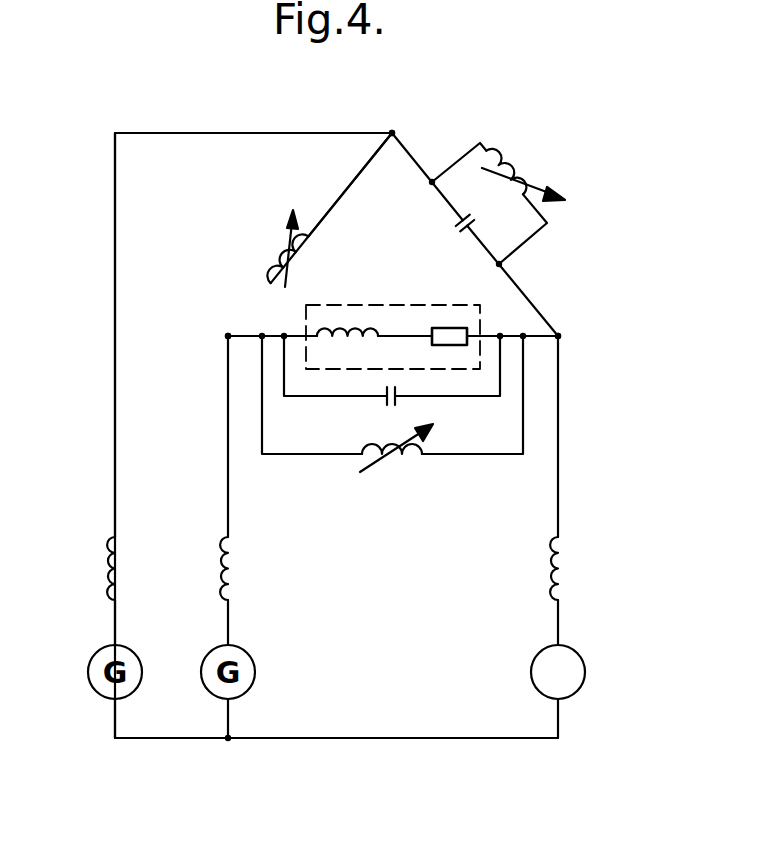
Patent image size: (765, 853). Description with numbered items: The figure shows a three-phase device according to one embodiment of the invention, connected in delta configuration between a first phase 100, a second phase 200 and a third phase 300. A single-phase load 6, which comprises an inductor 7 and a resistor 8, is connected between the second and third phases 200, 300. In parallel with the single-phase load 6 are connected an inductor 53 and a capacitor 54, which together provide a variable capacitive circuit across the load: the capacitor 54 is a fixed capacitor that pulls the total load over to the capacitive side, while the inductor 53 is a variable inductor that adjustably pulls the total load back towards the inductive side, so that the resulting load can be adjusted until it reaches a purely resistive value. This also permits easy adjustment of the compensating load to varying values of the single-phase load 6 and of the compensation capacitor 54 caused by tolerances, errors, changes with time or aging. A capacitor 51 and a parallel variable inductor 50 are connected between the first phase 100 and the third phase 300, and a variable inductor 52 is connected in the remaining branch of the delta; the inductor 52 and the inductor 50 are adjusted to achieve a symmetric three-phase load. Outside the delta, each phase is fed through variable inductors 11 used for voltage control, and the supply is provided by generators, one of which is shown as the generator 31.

The first phase 100 is at (391, 116).
The second phase 200 is at (199, 336).
The third phase 300 is at (586, 336).
The single-phase load 6 is at (400, 304).
The inductor 7 is at (341, 329).
The resistor 8 is at (447, 329).
The variable inductors 11 is at (106, 562).
The generator 31 is at (540, 681).
The variable inductor 50 is at (515, 170).
The capacitor 51 is at (450, 220).
The variable inductor 52 is at (270, 268).
The inductor 53 is at (400, 454).
The capacitor 54 is at (384, 403).